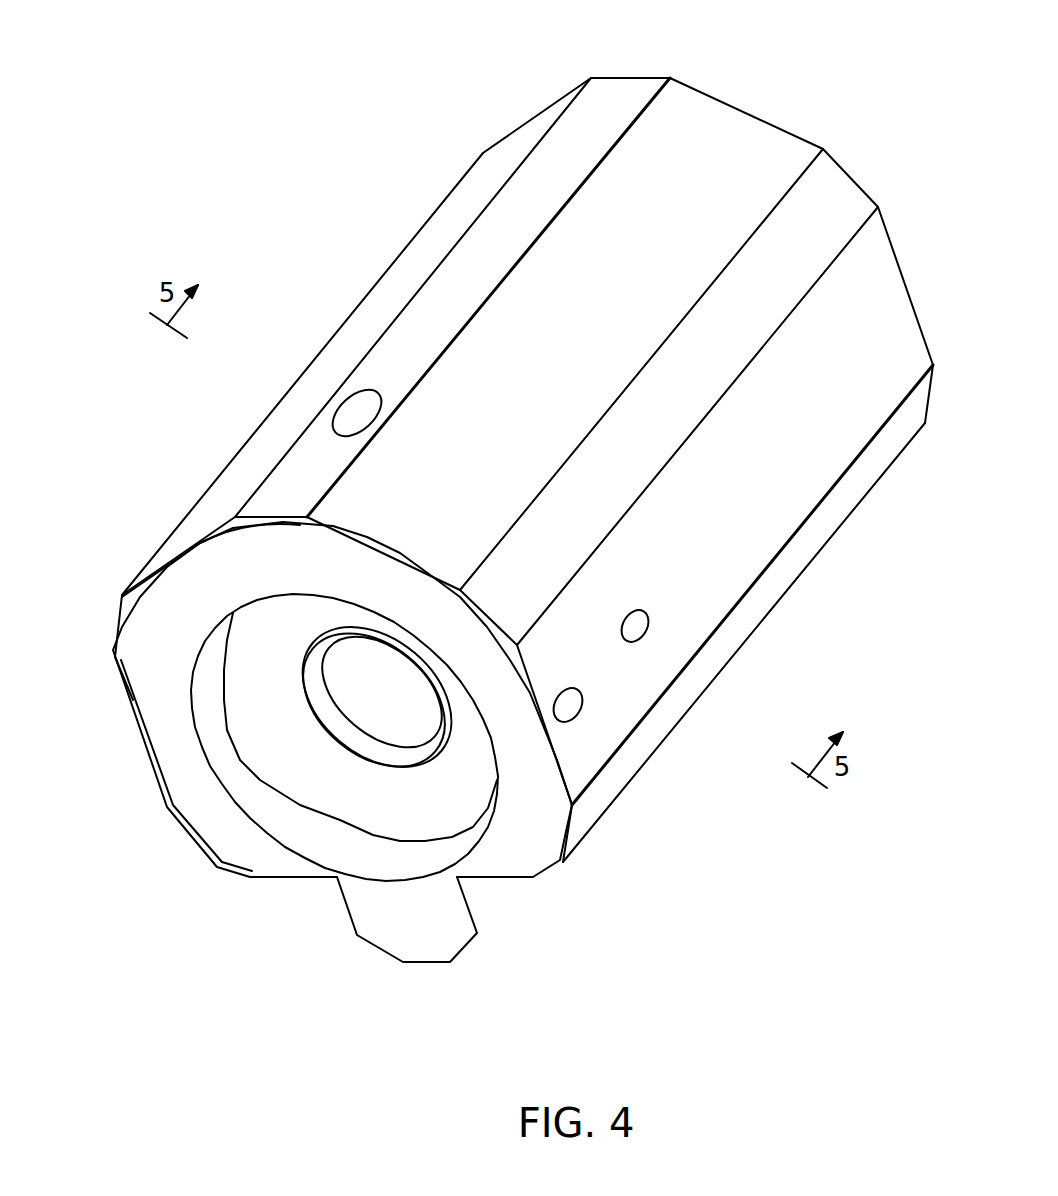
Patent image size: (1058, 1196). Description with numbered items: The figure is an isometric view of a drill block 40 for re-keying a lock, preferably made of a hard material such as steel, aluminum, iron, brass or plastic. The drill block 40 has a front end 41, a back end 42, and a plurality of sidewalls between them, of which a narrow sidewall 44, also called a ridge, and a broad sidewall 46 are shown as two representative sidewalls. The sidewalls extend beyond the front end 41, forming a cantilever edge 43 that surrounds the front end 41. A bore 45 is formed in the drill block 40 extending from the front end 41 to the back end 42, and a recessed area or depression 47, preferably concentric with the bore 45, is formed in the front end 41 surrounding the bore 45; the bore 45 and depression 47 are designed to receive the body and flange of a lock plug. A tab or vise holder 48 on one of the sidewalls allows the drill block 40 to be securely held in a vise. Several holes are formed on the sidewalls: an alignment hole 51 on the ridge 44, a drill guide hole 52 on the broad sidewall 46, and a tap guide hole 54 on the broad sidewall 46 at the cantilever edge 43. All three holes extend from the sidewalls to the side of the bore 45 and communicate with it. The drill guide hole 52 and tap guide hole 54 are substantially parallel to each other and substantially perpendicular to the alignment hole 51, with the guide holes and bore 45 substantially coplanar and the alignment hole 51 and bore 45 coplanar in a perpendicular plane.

The drill block 40 is at (815, 870).
The front end 41 is at (433, 793).
The back end 42 is at (527, 437).
The cantilever edge 43 is at (349, 783).
The narrow sidewall 44 is at (437, 297).
The bore 45 is at (420, 718).
The broad sidewall 46 is at (725, 506).
The depression 47 is at (355, 737).
The vise holder 48 is at (477, 907).
The alignment hole 51 is at (333, 410).
The drill guide hole 52 is at (650, 627).
The tap guide hole 54 is at (578, 718).